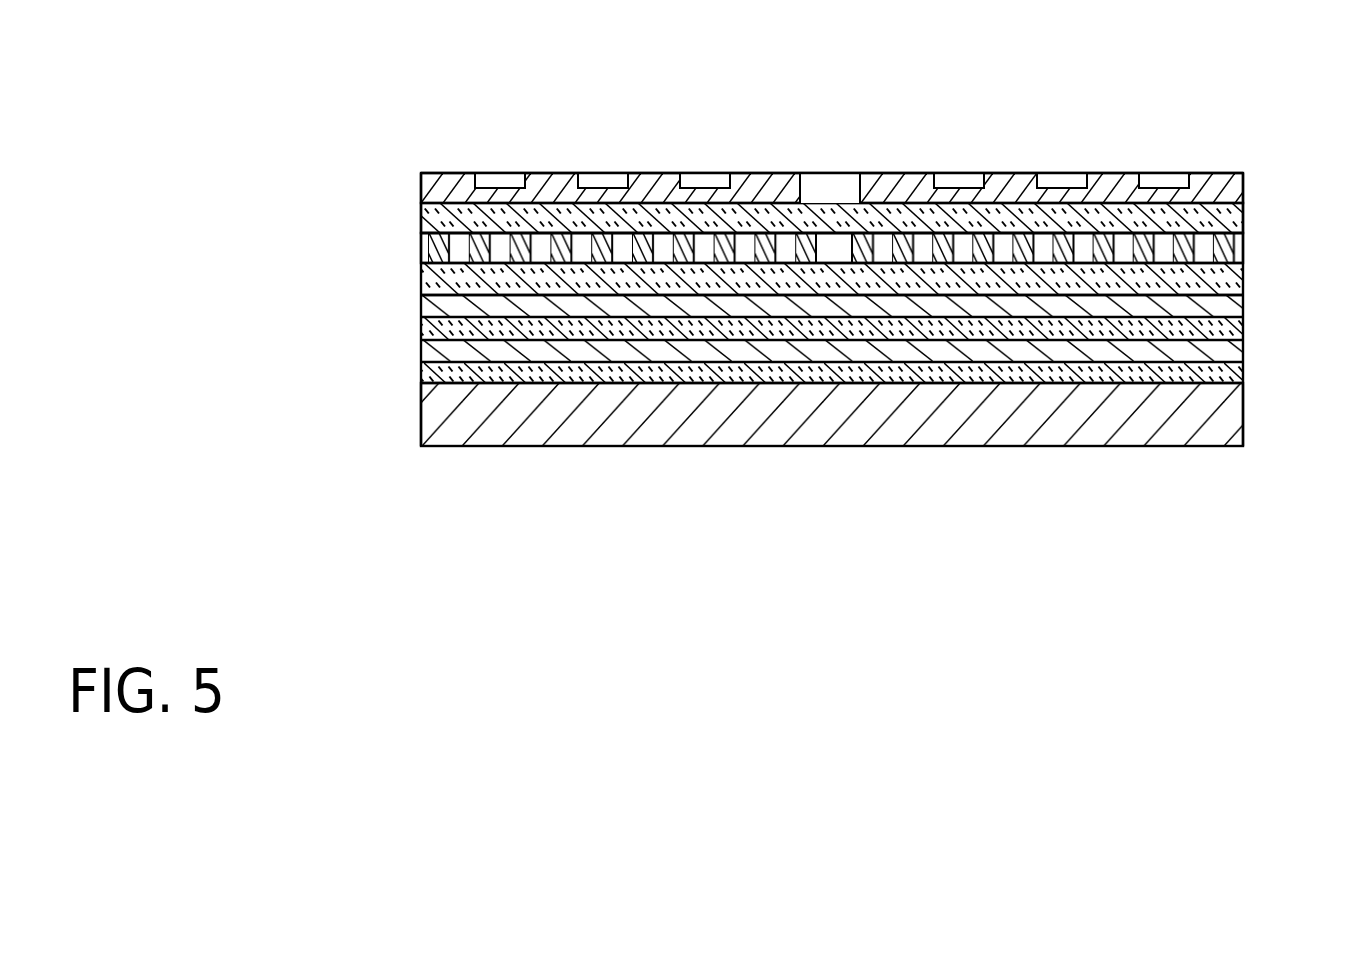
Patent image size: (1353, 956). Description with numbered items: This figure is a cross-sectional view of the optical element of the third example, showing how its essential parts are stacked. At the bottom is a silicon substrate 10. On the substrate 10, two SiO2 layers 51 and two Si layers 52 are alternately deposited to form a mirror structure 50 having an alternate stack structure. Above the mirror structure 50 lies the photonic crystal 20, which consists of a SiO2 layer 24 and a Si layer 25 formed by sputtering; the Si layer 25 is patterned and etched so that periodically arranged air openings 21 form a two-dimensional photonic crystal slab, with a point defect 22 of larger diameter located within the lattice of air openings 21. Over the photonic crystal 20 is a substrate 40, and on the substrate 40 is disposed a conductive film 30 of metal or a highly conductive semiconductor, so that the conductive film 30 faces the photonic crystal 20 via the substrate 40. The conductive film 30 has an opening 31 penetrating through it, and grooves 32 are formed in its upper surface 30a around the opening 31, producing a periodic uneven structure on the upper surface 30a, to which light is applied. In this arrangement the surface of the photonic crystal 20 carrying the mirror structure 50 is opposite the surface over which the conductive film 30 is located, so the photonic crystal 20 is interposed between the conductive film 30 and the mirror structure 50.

The substrate 10 is at (421, 412).
The photonic crystal 20 is at (398, 228).
The air openings 21 is at (787, 250).
The point defect 22 is at (832, 252).
The SiO2 layer 24 is at (1245, 280).
The Si layer 25 is at (1245, 248).
The conductive film 30 is at (421, 181).
The upper surface 30a is at (1222, 174).
The opening 31 is at (842, 185).
The grooves 32 is at (707, 175).
The substrate 40 is at (422, 218).
The mirror structure 50 is at (398, 297).
The SiO2 layers 51 is at (1245, 328).
The Si layers 52 is at (1245, 305).